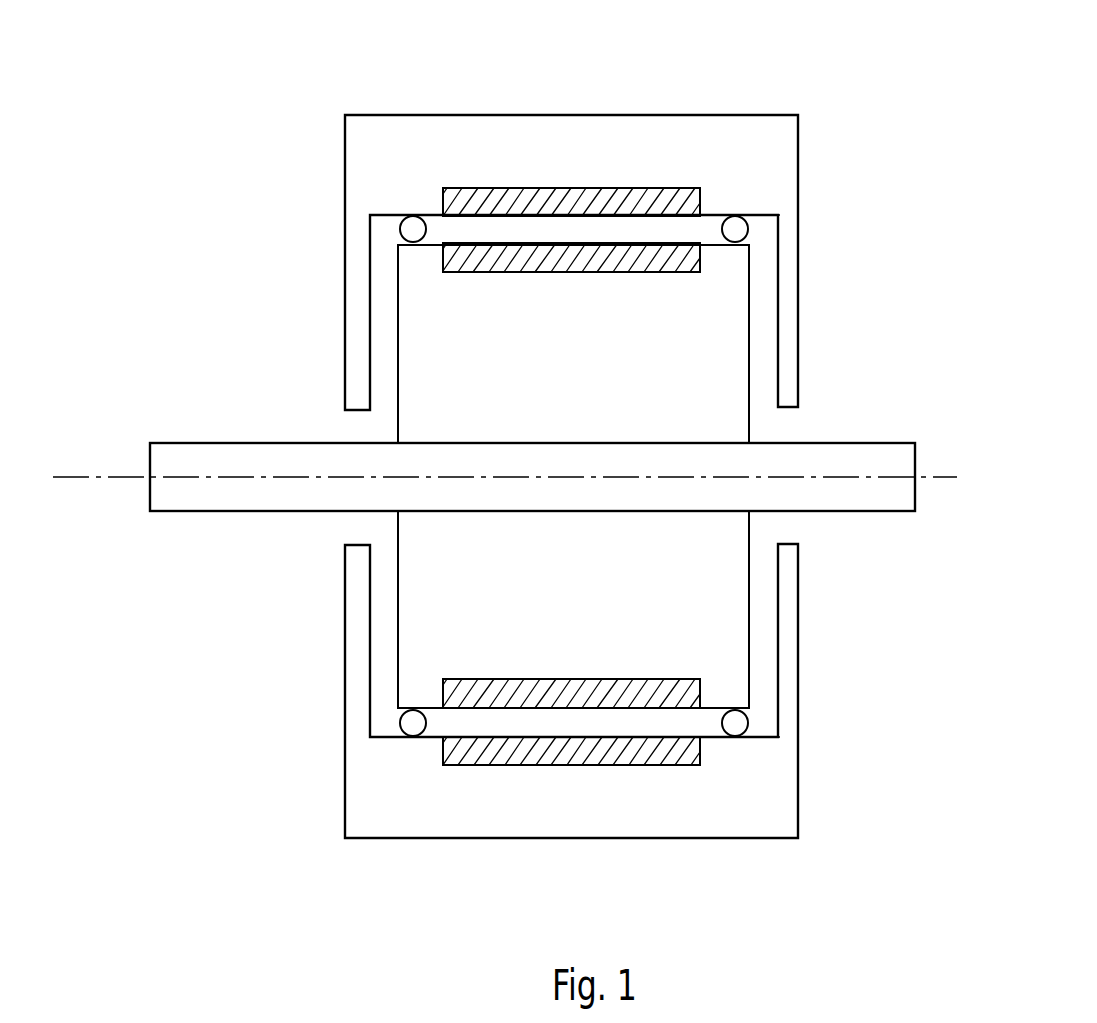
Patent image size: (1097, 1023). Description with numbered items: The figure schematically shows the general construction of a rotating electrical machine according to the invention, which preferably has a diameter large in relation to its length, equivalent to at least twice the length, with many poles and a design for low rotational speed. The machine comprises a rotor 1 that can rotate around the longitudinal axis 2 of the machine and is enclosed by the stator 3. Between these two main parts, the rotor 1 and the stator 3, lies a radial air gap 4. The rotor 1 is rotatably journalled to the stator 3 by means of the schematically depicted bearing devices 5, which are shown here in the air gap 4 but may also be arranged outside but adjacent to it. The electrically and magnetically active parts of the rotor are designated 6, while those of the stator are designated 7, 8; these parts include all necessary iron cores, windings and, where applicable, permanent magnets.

The rotor 1 is at (573, 476).
The longitudinal axis 2 is at (118, 515).
The stator 3 is at (571, 476).
The radial air gap 4 is at (681, 219).
The bearing devices 5 is at (574, 476).
The electrically and magnetically active parts of the rotor 6 is at (585, 265).
The electrically and magnetically active parts of the stator 7 is at (585, 397).
The electrically and magnetically active parts of the stator 8 is at (585, 194).